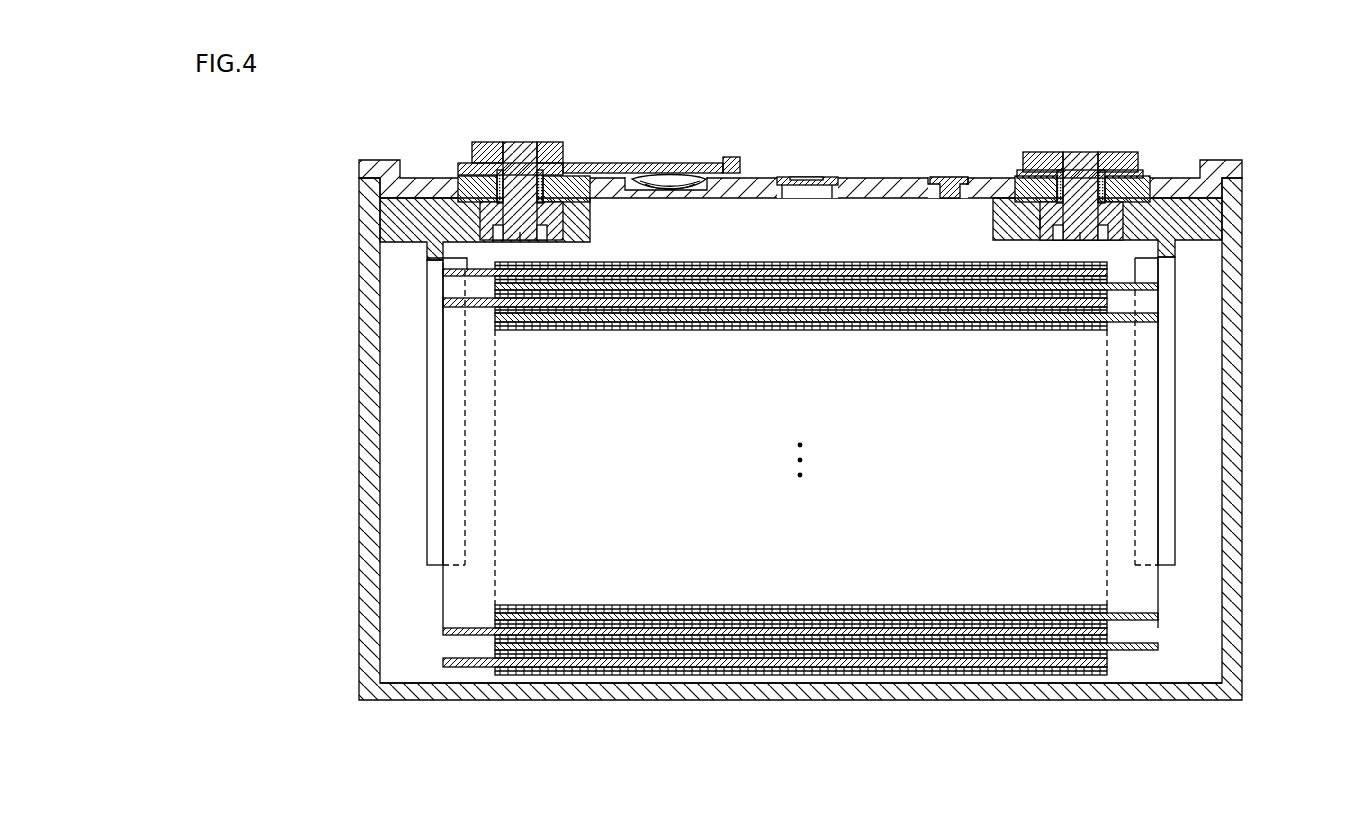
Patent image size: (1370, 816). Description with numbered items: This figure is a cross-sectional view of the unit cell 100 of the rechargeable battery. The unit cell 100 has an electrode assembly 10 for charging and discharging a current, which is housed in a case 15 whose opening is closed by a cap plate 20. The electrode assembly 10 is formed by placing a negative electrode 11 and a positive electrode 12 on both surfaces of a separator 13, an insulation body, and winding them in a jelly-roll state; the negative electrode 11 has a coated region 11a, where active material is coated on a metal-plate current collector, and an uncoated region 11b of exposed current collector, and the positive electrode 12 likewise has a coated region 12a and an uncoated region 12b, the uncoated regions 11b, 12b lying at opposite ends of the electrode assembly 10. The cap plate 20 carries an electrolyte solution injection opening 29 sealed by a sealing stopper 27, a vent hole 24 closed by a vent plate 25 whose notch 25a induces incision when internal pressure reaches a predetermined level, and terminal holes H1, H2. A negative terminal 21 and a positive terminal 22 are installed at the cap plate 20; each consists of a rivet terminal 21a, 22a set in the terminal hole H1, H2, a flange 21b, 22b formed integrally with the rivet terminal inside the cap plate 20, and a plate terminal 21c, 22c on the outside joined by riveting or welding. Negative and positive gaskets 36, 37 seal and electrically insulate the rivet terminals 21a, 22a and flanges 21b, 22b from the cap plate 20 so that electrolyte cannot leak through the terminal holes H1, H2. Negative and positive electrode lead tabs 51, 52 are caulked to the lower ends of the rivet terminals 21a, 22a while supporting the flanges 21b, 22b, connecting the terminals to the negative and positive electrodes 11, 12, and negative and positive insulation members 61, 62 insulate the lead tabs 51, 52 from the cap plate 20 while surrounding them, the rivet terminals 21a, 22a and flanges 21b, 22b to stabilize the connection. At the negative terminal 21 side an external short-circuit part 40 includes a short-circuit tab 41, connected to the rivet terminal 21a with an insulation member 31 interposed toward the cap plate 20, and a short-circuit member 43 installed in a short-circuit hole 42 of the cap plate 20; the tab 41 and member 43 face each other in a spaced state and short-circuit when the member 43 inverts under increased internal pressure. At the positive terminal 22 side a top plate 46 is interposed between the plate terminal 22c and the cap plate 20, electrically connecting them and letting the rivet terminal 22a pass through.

The unit cell 100 is at (836, 86).
The electrode assembly 10 is at (928, 676).
The negative electrode 11 is at (775, 526).
The coated region 11a is at (596, 645).
The uncoated region 11b is at (617, 752).
The positive electrode 12 is at (835, 524).
The coated region 12a is at (1030, 660).
The uncoated region 12b is at (1015, 752).
The separator 13 is at (817, 670).
The case 15 is at (1235, 365).
The cap plate 20 is at (880, 186).
The negative terminal 21 is at (539, 235).
The rivet terminal 21a is at (520, 242).
The flange 21b is at (588, 163).
The plate terminal 21c is at (545, 147).
The positive terminal 22 is at (1126, 181).
The rivet terminal 22a is at (1098, 240).
The flange 22b is at (1040, 220).
The plate terminal 22c is at (1125, 158).
The vent hole 24 is at (807, 195).
The vent plate 25 is at (832, 177).
The notch 25a is at (800, 177).
The sealing stopper 27 is at (956, 178).
The electrolyte solution injection opening 29 is at (945, 180).
The insulation member 31 is at (730, 157).
The negative gasket 36 is at (468, 180).
The positive gasket 37 is at (1052, 176).
The external short-circuit part 40 is at (675, 162).
The short-circuit tab 41 is at (625, 163).
The short-circuit hole 42 is at (698, 188).
The short-circuit member 43 is at (658, 190).
The top plate 46 is at (1143, 172).
The negative electrode lead tab 51 is at (427, 378).
The positive electrode lead tab 52 is at (1176, 530).
The negative insulation member 61 is at (397, 216).
The positive insulation member 62 is at (1205, 220).
The terminal hole H1 is at (500, 180).
The terminal hole H2 is at (1085, 166).